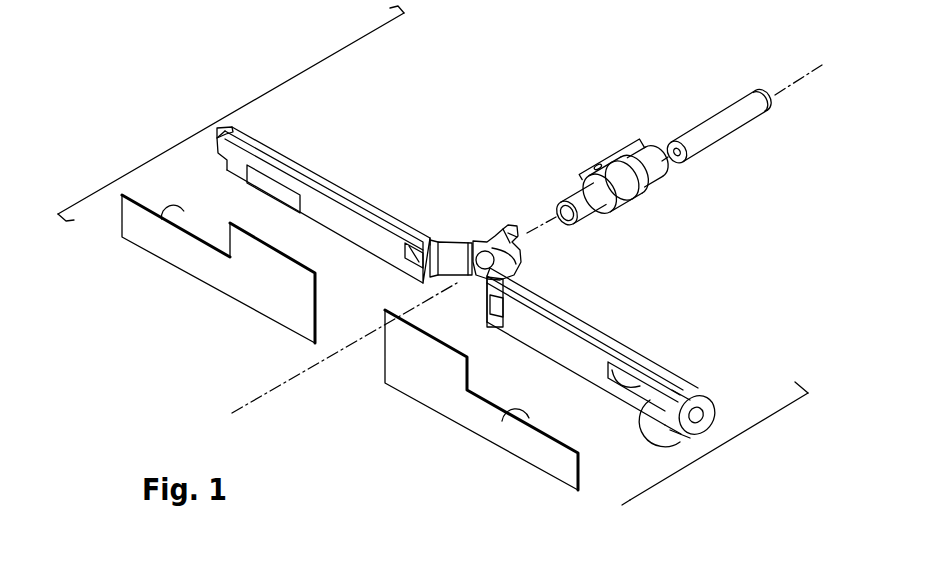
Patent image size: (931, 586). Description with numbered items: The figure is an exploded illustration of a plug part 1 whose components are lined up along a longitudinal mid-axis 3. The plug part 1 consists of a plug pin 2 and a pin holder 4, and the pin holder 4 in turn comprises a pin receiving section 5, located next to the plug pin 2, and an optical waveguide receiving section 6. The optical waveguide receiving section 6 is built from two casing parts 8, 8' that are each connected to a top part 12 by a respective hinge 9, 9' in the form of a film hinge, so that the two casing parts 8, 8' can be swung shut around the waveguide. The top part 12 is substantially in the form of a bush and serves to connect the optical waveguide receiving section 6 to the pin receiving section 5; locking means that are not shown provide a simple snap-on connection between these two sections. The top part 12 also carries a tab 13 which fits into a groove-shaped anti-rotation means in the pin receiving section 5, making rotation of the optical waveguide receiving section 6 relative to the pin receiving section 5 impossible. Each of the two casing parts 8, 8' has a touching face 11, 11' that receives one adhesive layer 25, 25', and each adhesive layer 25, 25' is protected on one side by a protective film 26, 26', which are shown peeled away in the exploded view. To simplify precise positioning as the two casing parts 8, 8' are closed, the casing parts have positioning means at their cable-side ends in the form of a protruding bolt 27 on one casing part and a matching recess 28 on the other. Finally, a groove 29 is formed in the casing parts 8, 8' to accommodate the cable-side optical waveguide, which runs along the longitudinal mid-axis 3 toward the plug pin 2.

The plug part 1 is at (606, 0).
The plug pin 2 is at (710, 130).
The longitudinal mid-axis 3 is at (795, 74).
The pin holder 4 is at (266, 86).
The pin receiving section 5 is at (650, 190).
The optical waveguide receiving section 6 is at (700, 455).
The casing part 8 is at (614, 346).
The casing part 8' is at (323, 200).
The hinge 9 is at (553, 291).
The hinge 9' is at (451, 210).
The touching face 11 is at (585, 327).
The touching face 11' is at (339, 188).
The top part 12 is at (490, 236).
The tab 13 is at (510, 235).
The adhesive layer 25 is at (474, 454).
The adhesive layer 25' is at (123, 262).
The protective film 26 is at (468, 400).
The protective film 26' is at (216, 278).
The protruding bolt 27 is at (665, 395).
The recess 28 is at (232, 127).
The groove 29 is at (262, 172).